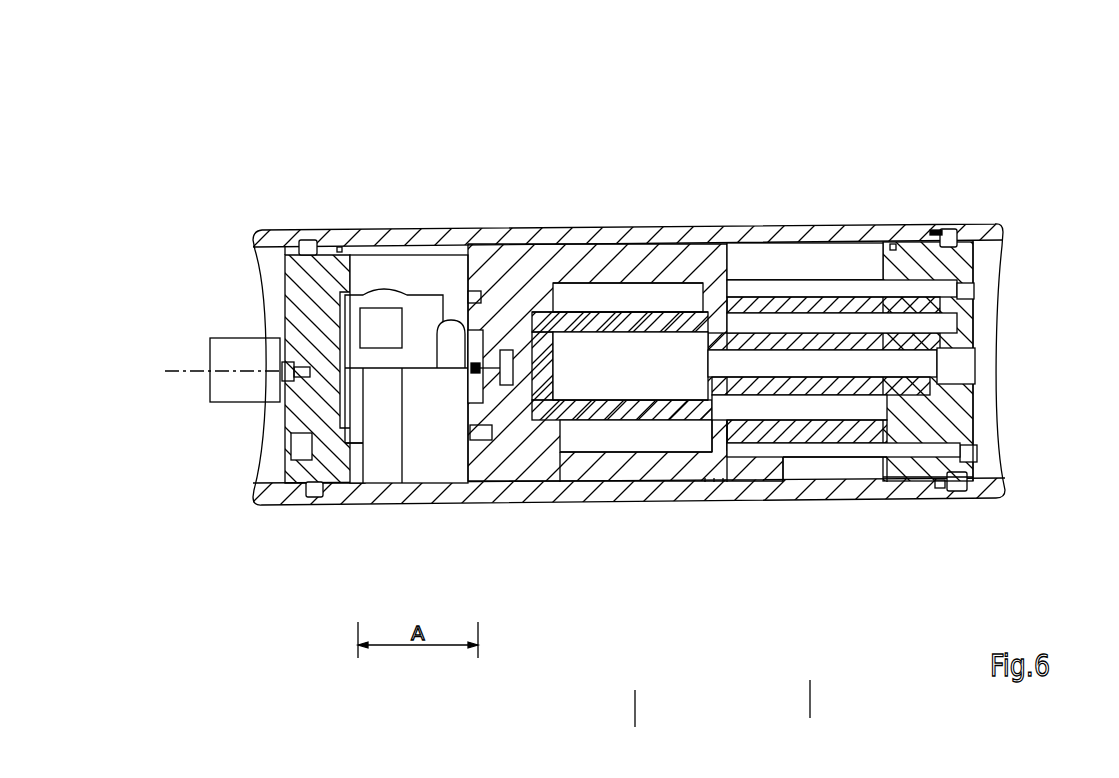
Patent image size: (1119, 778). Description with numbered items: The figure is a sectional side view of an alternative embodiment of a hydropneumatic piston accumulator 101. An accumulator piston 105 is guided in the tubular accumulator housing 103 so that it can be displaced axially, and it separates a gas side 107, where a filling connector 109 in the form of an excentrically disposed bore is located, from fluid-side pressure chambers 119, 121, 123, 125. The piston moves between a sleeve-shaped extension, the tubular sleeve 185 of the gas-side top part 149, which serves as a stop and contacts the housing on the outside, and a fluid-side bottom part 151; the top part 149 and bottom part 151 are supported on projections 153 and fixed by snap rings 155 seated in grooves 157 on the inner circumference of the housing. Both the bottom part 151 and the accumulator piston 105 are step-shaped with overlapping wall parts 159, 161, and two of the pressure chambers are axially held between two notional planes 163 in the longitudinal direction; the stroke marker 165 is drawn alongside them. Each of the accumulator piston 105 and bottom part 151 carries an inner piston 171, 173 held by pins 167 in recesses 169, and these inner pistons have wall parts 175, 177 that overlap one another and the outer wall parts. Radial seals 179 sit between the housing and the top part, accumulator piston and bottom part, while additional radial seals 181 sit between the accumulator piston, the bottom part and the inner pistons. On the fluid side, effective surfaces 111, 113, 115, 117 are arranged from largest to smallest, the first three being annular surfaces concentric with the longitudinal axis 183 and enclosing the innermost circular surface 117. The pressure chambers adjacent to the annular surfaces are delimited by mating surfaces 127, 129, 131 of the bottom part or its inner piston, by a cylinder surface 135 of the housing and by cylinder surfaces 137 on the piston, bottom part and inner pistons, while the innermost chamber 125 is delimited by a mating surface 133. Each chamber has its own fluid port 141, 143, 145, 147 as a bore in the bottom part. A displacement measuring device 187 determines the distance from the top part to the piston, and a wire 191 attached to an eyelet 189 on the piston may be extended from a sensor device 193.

The hydropneumatic piston accumulator 101 is at (940, 143).
The accumulator housing 103 is at (797, 482).
The accumulator piston 105 is at (547, 482).
The gas side 107 is at (412, 445).
The filling connector 109 is at (303, 448).
The effective surface 111 is at (745, 482).
The effective surface 113 is at (575, 482).
The effective surface 115 is at (760, 482).
The effective surface 117 is at (600, 482).
The pressure chamber 119 is at (779, 262).
The pressure chamber 121 is at (670, 482).
The pressure chamber 123 is at (763, 482).
The pressure chamber 125 is at (626, 398).
The mating surface 127 is at (897, 482).
The mating surface 129 is at (673, 482).
The mating surface 131 is at (873, 482).
The mating surface 133 is at (690, 243).
The cylinder surface 135 is at (850, 482).
The cylinder surfaces 137 is at (627, 482).
The fluid port 141 is at (980, 452).
The fluid port 143 is at (975, 292).
The fluid port 145 is at (975, 308).
The fluid port 147 is at (967, 365).
The top part 149 is at (300, 280).
The bottom part 151 is at (920, 482).
The projections 153 is at (333, 245).
The snap rings 155 is at (313, 243).
The grooves 157 is at (305, 243).
The wall part 159 is at (830, 265).
The wall part 161 is at (637, 265).
The notional planes 163 is at (808, 687).
The stroke position 165 is at (635, 693).
The pins 167 is at (513, 352).
The recesses 169 is at (493, 385).
The inner piston 171 is at (645, 482).
The inner piston 173 is at (867, 482).
The wall part 175 is at (597, 283).
The wall part 177 is at (748, 275).
The radial seals 179 is at (350, 245).
The radial seals 181 is at (724, 482).
The longitudinal axis 183 is at (172, 376).
The sleeve 185 is at (380, 483).
The displacement measuring device 187 is at (205, 335).
The eyelet 189 is at (467, 375).
The wire 191 is at (398, 483).
The sensor device 193 is at (228, 405).